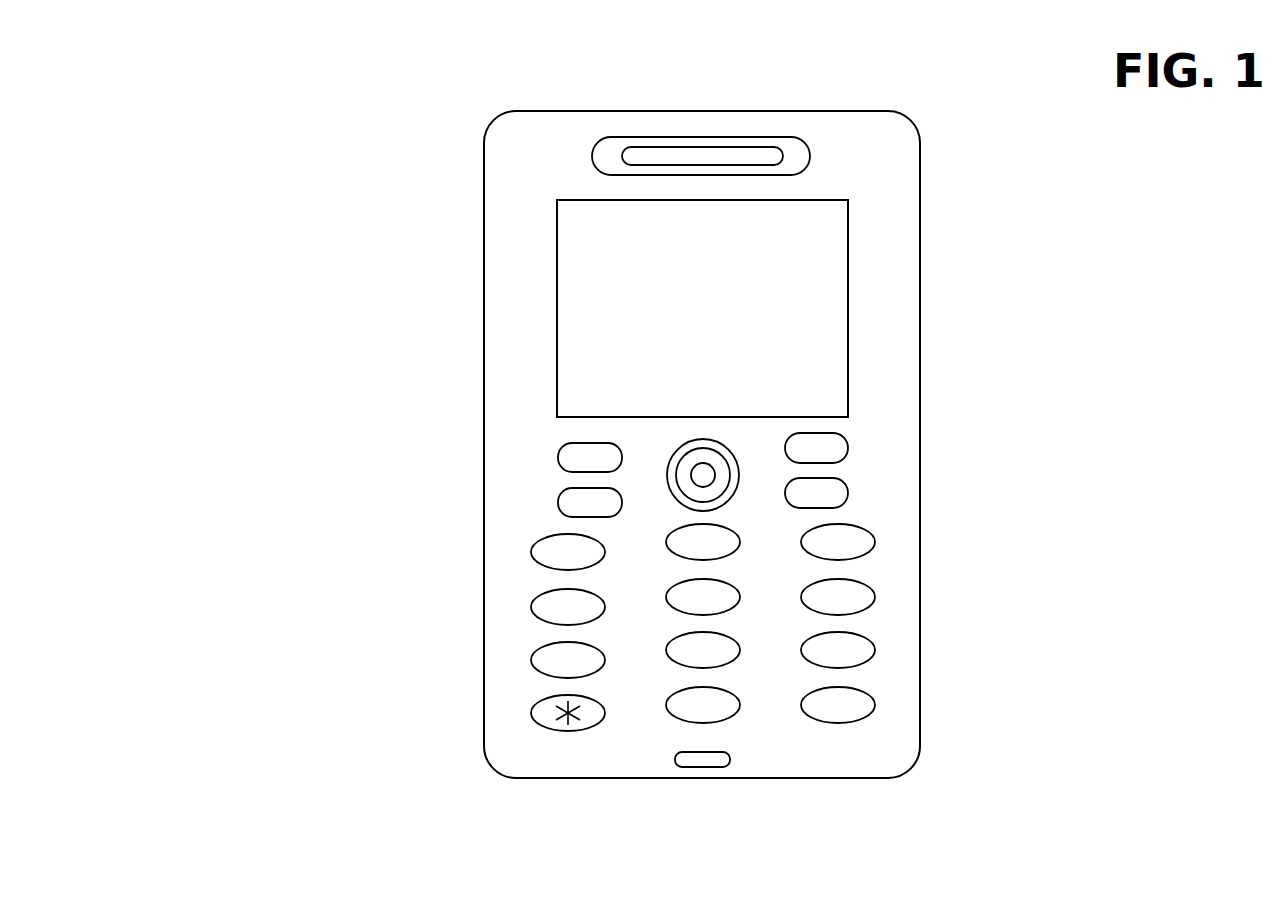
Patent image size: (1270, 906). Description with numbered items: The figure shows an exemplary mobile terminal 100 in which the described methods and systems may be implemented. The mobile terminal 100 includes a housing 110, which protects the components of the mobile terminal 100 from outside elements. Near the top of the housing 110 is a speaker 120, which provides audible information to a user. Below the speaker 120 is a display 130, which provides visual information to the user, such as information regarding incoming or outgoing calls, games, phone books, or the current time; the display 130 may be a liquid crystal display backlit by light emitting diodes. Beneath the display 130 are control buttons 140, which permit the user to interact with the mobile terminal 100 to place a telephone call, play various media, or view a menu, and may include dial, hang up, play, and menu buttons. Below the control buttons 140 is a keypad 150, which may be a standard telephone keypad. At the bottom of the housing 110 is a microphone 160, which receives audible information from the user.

The mobile terminal 100 is at (175, 74).
The housing 110 is at (484, 145).
The speaker 120 is at (810, 153).
The display 130 is at (848, 308).
The control buttons 140 is at (865, 425).
The keypad 150 is at (888, 722).
The microphone 160 is at (706, 767).